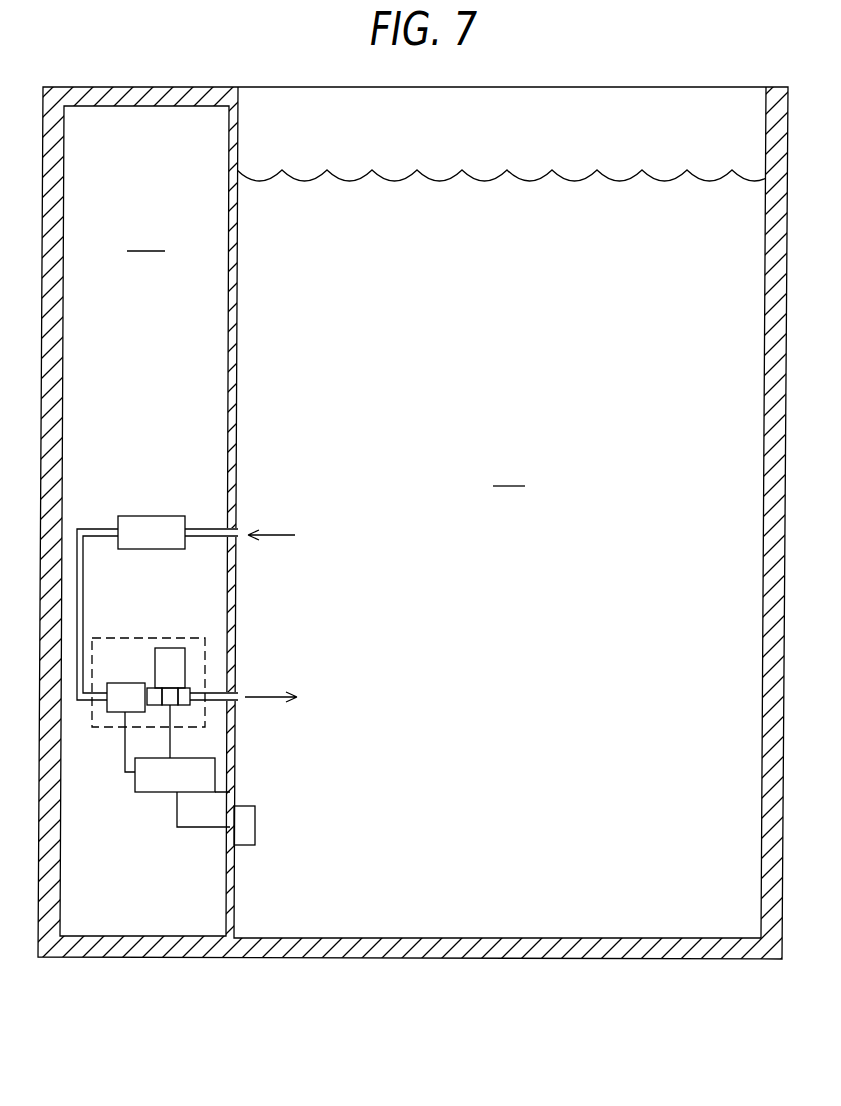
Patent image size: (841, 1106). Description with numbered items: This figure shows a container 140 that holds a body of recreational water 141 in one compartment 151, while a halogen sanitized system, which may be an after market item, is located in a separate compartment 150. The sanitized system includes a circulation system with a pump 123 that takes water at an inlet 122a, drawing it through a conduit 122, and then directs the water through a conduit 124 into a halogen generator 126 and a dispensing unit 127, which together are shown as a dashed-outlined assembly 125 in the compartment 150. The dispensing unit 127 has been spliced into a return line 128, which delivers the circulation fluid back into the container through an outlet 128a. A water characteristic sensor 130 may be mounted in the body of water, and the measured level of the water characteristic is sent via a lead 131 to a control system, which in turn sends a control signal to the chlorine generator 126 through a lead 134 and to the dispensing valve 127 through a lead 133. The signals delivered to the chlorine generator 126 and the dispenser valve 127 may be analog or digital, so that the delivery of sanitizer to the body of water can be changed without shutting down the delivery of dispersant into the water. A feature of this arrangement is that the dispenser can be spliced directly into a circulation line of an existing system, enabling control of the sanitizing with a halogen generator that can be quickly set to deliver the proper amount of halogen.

The container 140 is at (168, 58).
The body of recreational water 141 is at (437, 180).
The compartment 150 is at (146, 238).
The compartment 151 is at (509, 473).
The conduit 122 is at (200, 528).
The inlet 122a is at (240, 530).
The pump 123 is at (148, 516).
The conduit 124 is at (76, 582).
The valve assembly 125 is at (160, 610).
The halogen generator 126 is at (105, 712).
The dispensing unit 127 is at (188, 695).
The return line 128 is at (213, 693).
The outlet 128a is at (237, 700).
The water characteristic sensor 130 is at (250, 823).
The lead 131 is at (203, 828).
The lead 133 is at (170, 741).
The lead 134 is at (123, 762).